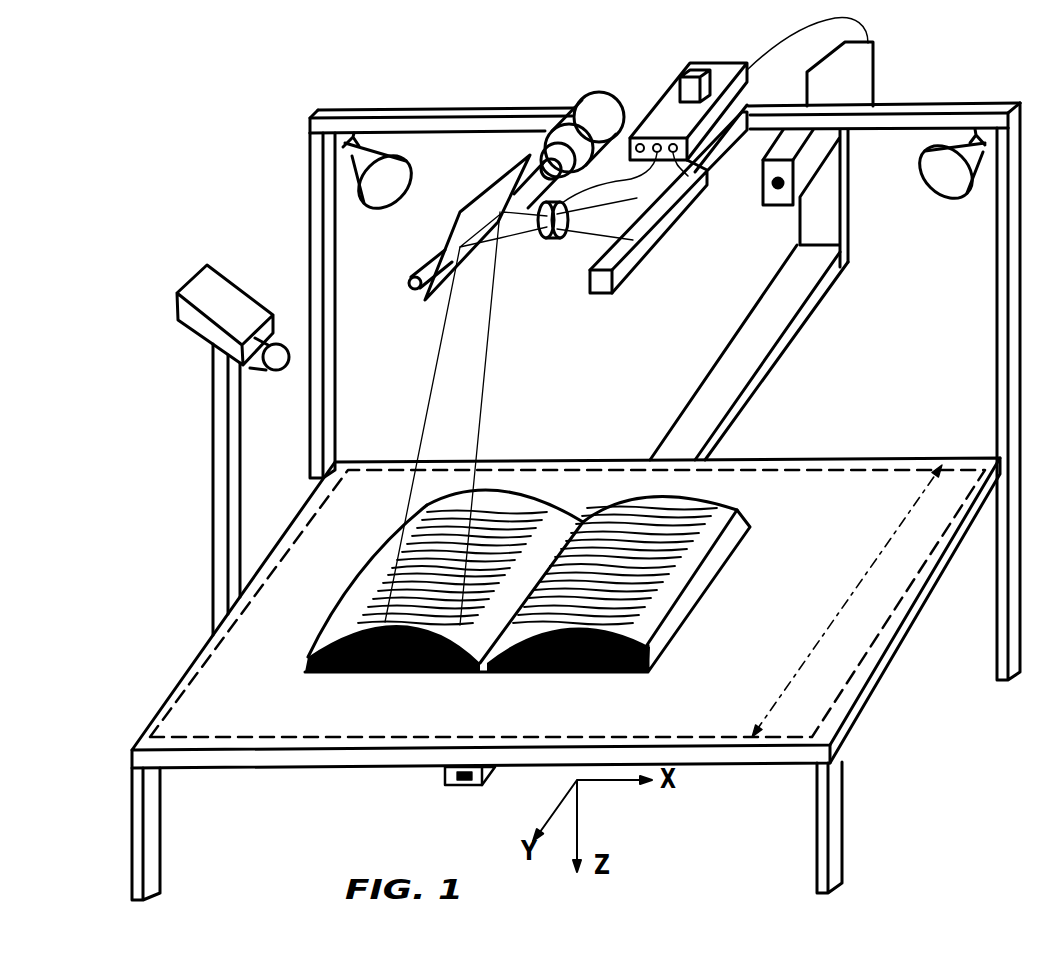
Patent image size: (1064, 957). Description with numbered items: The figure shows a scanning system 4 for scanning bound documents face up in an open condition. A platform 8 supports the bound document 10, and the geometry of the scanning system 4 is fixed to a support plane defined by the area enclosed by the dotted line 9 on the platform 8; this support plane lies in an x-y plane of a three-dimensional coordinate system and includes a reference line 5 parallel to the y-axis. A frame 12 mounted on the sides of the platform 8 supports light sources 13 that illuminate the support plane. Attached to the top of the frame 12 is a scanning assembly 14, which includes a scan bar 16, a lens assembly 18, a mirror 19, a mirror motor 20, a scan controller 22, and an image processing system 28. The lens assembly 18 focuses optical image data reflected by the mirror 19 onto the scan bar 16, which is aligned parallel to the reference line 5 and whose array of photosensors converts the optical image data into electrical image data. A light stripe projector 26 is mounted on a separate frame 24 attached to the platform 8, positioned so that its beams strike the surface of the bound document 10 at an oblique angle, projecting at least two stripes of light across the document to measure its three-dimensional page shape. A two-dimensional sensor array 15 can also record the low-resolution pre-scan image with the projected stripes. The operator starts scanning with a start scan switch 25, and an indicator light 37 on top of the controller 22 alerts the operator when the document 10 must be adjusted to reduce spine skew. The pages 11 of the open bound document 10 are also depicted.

The scanning system 4 is at (552, 85).
The reference line 5 is at (875, 558).
The platform 8 is at (710, 763).
The dotted line (support plane) 9 is at (908, 602).
The bound document 10 is at (693, 598).
The book pages 11 is at (583, 522).
The frame 12 is at (1020, 258).
The light sources 13 is at (352, 187).
The scanning assembly 14 is at (424, 247).
The two-dimensional sensor array 15 is at (255, 292).
The scan bar 16 is at (647, 243).
The lens assembly 18 is at (540, 240).
The mirror 19 is at (492, 183).
The mirror motor 20 is at (600, 93).
The scan controller 22 is at (712, 63).
The frame 24 is at (793, 337).
The start scan switch 25 is at (448, 786).
The light stripe projector 26 is at (873, 67).
The image processing system 28 is at (743, 97).
The indicator light 37 is at (680, 77).